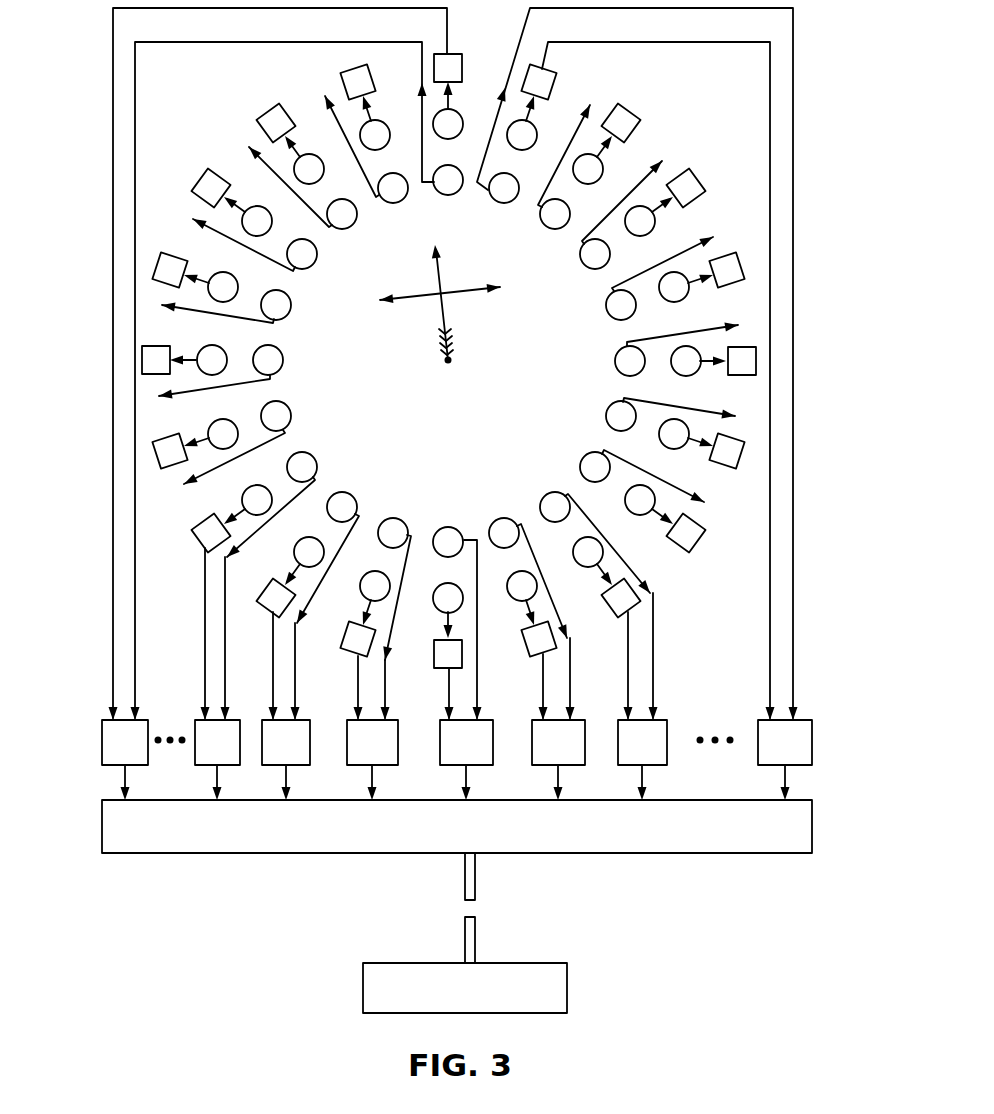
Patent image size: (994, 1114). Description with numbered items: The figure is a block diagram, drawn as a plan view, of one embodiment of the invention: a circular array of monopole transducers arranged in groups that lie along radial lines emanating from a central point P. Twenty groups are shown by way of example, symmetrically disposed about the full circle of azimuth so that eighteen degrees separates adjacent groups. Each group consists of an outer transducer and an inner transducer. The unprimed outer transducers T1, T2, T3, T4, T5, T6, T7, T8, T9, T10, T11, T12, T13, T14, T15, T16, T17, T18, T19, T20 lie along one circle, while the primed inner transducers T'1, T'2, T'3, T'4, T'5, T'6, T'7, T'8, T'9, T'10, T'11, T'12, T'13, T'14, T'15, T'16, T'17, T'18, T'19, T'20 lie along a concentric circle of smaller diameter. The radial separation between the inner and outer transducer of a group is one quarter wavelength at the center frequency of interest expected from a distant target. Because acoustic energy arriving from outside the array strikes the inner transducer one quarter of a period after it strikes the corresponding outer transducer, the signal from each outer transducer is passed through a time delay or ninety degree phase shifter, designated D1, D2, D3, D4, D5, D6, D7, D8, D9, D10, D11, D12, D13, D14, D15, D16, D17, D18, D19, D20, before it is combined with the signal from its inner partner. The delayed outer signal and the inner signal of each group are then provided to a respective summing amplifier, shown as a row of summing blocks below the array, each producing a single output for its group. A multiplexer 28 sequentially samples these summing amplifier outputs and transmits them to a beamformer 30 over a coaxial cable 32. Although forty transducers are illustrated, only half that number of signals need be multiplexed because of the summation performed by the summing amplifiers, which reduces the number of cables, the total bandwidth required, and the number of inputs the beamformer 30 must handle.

The time delay or phase shifter D1 is at (462, 58).
The time delay or phase shifter D2 is at (372, 75).
The time delay or phase shifter D3 is at (287, 112).
The time delay or phase shifter D4 is at (220, 175).
The time delay or phase shifter D5 is at (174, 254).
The time delay or phase shifter D6 is at (159, 345).
The time delay or phase shifter D7 is at (169, 435).
The time delay or phase shifter D8 is at (197, 525).
The time delay or phase shifter D9 is at (260, 597).
The time delay or phase shifter D10 is at (342, 640).
The time delay or phase shifter D11 is at (433, 655).
The time delay or phase shifter D12 is at (525, 647).
The time delay or phase shifter D13 is at (612, 611).
The time delay or phase shifter D14 is at (699, 541).
The time delay or phase shifter D15 is at (731, 467).
The time delay or phase shifter D16 is at (743, 376).
The time delay or phase shifter D17 is at (734, 256).
The time delay or phase shifter D18 is at (701, 183).
The time delay or phase shifter D19 is at (635, 117).
The time delay or phase shifter D20 is at (554, 76).
The outer monopole transducer T1 is at (459, 113).
The outer monopole transducer T2 is at (388, 127).
The outer monopole transducer T3 is at (323, 164).
The outer monopole transducer T4 is at (270, 214).
The outer monopole transducer T5 is at (216, 280).
The outer monopole transducer T6 is at (216, 346).
The outer monopole transducer T7 is at (223, 419).
The outer monopole transducer T8 is at (256, 485).
The outer monopole transducer T9 is at (298, 562).
The outer monopole transducer T10 is at (362, 598).
The outer monopole transducer T11 is at (434, 596).
The outer monopole transducer T12 is at (510, 595).
The outer monopole transducer T13 is at (588, 563).
The outer monopole transducer T14 is at (636, 514).
The outer monopole transducer T15 is at (677, 449).
The outer monopole transducer T16 is at (689, 375).
The outer monopole transducer T17 is at (682, 300).
The outer monopole transducer T18 is at (652, 230).
The outer monopole transducer T19 is at (603, 169).
The outer monopole transducer T20 is at (536, 130).
The inner monopole transducer T'1 is at (303, 381).
The inner monopole transducer T'2 is at (374, 159).
The inner monopole transducer T'3 is at (316, 197).
The inner monopole transducer T'4 is at (271, 251).
The inner monopole transducer T'5 is at (242, 306).
The inner monopole transducer T'6 is at (236, 369).
The inner monopole transducer T'7 is at (248, 436).
The inner monopole transducer T'8 is at (279, 575).
The inner monopole transducer T'9 is at (328, 595).
The inner monopole transducer T'10 is at (396, 604).
The inner monopole transducer T'11 is at (457, 608).
The inner monopole transducer T'12 is at (527, 603).
The inner monopole transducer T'13 is at (593, 590).
The inner monopole transducer T'14 is at (643, 478).
The inner monopole transducer T'15 is at (653, 414).
The inner monopole transducer T'16 is at (658, 350).
The inner monopole transducer T'17 is at (660, 281).
The inner monopole transducer T'18 is at (622, 213).
The inner monopole transducer T'19 is at (566, 166).
The inner monopole transducer T'20 is at (637, 364).
The multiplexer 28 is at (737, 855).
The beamformer 30 is at (567, 988).
The coaxial cable 32 is at (476, 878).
The central point P is at (451, 364).